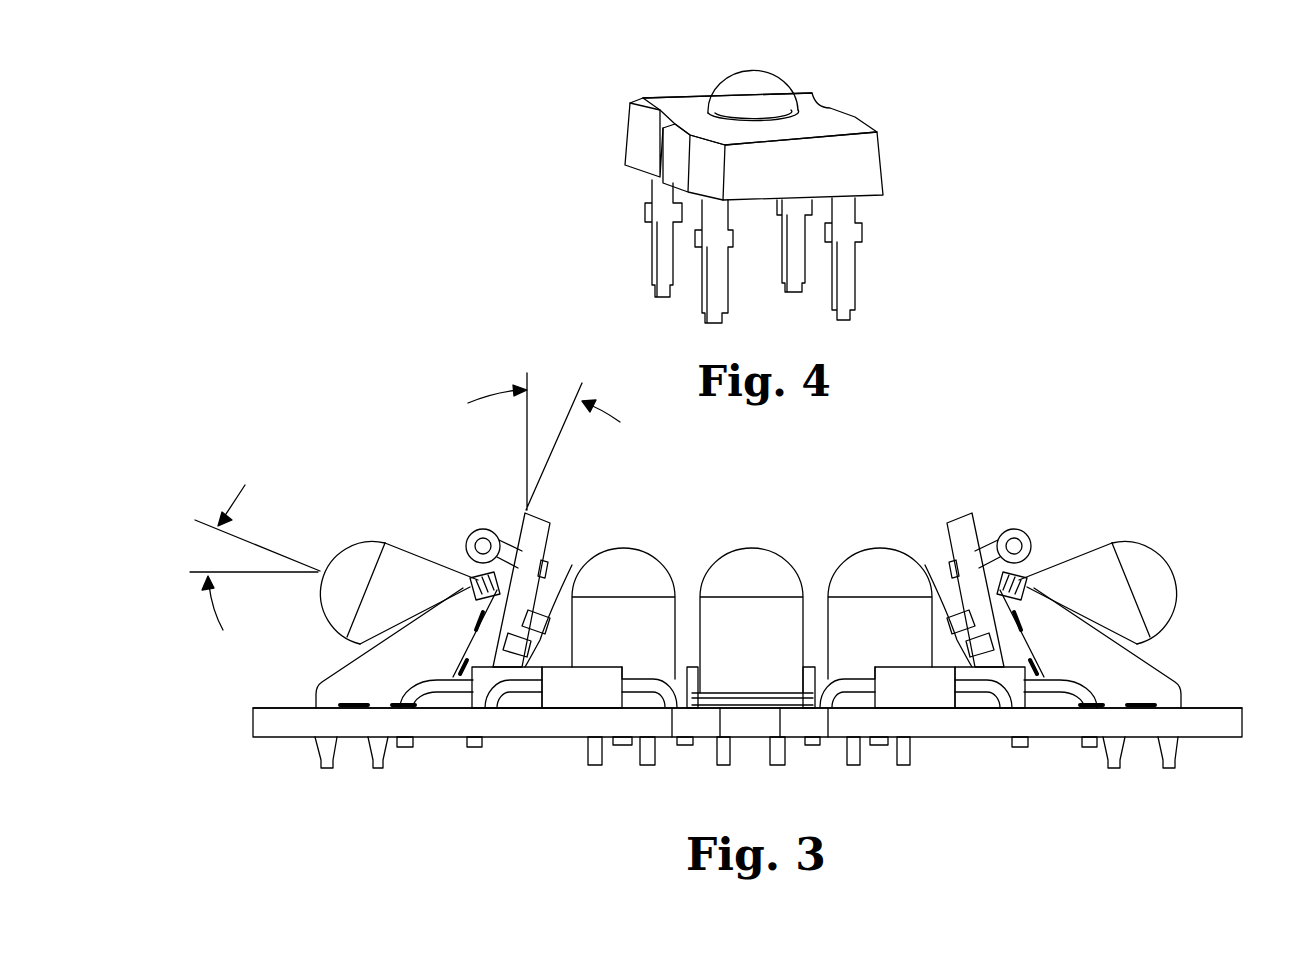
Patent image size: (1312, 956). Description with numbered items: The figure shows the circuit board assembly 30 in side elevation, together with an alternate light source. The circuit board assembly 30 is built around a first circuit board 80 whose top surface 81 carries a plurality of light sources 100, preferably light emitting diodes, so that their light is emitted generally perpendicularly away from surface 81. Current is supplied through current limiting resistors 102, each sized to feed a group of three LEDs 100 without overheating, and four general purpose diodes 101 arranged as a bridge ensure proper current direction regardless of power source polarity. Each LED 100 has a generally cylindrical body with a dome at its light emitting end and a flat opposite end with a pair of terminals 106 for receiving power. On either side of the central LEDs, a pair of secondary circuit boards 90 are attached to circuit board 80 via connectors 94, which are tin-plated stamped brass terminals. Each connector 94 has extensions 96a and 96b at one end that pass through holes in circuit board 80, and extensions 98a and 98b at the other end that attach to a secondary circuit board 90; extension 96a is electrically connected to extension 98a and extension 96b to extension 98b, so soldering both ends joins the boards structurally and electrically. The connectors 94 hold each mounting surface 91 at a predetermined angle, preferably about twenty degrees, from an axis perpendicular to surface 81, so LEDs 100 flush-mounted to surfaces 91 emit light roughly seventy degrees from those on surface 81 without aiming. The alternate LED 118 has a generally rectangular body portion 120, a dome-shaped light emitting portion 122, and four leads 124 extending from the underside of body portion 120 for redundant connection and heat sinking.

In FIG. 3, the circuit board assembly 30 is at (726, 624).
In FIG. 3, the first circuit board 80 is at (1218, 712).
In FIG. 3, the top surface of circuit board 81 is at (262, 708).
In FIG. 3, the secondary circuit board 90 is at (527, 513).
In FIG. 3, the circuit board surface 91 is at (508, 526).
In FIG. 3, the connector 94 is at (337, 667).
In FIG. 3, the extension 96a is at (326, 768).
In FIG. 3, the extension 96b is at (378, 768).
In FIG. 3, the extension 98a is at (541, 562).
In FIG. 3, the extension 98b is at (572, 565).
In FIG. 3, the light source 100 is at (347, 540).
In FIG. 3, the general purpose diode 101 is at (582, 698).
In FIG. 3, the current limiting resistor 102 is at (465, 536).
In FIG. 3, the terminal 106 is at (853, 767).
In FIG. 4, the alternate LED design 118 is at (862, 167).
In FIG. 4, the body portion 120 is at (803, 106).
In FIG. 4, the dome-shaped light emitting portion 122 is at (745, 72).
In FIG. 4, the lead 124 is at (651, 229).